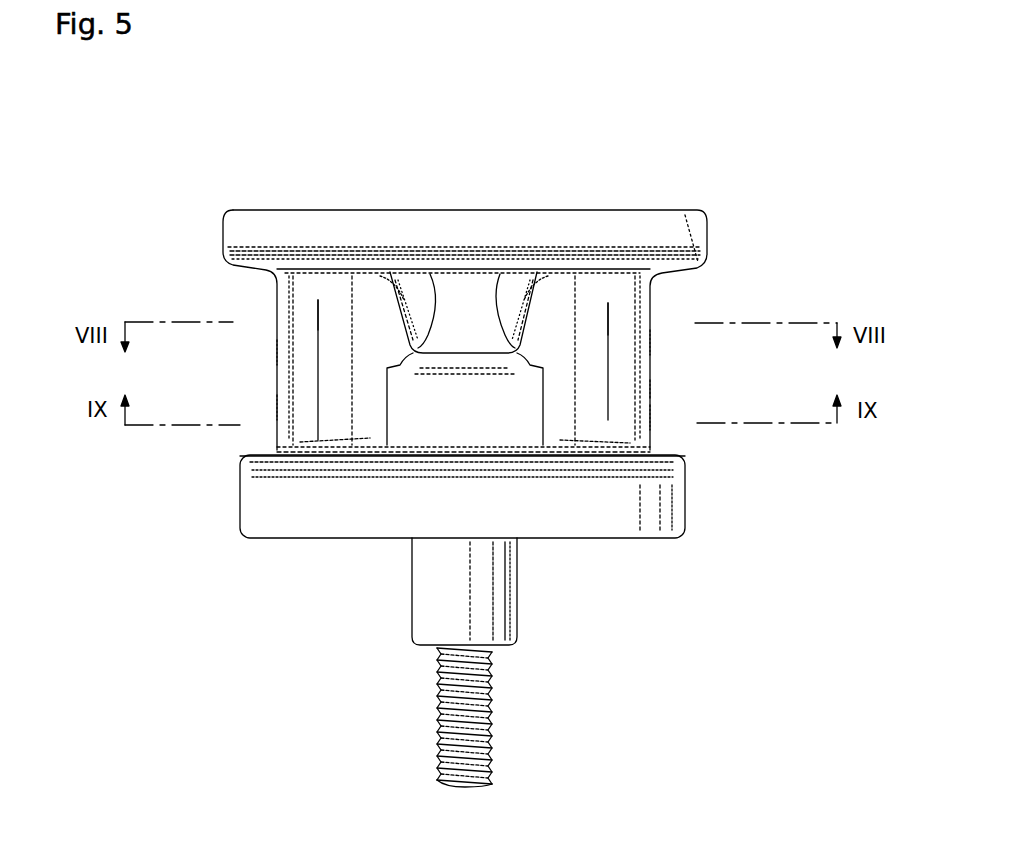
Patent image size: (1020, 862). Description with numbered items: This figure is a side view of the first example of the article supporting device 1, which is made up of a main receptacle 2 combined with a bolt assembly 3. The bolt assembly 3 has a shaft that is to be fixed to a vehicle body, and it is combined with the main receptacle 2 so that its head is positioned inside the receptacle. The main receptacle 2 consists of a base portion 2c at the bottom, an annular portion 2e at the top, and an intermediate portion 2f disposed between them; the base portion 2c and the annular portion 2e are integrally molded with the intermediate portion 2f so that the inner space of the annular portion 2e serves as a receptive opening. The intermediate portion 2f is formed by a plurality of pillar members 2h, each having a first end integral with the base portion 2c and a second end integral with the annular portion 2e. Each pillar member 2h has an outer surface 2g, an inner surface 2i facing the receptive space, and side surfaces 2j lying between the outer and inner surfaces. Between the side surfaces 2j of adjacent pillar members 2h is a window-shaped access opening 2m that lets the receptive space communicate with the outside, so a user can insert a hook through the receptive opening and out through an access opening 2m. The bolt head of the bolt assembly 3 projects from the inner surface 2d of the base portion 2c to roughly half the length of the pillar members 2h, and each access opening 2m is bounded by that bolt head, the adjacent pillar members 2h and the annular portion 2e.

The article supporting device 1 is at (625, 185).
The main receptacle 2 is at (706, 225).
The annular portion 2e is at (465, 330).
The access opening 2m is at (453, 303).
The inner surface 2i is at (425, 316).
The pillar member 2h is at (490, 303).
The side surface 2j is at (330, 306).
The outer surface 2g is at (277, 352).
The intermediate portion 2f is at (652, 392).
The base portion 2c is at (680, 515).
The inner surface of the base portion 2d is at (570, 463).
The bolt assembly 3 is at (433, 703).